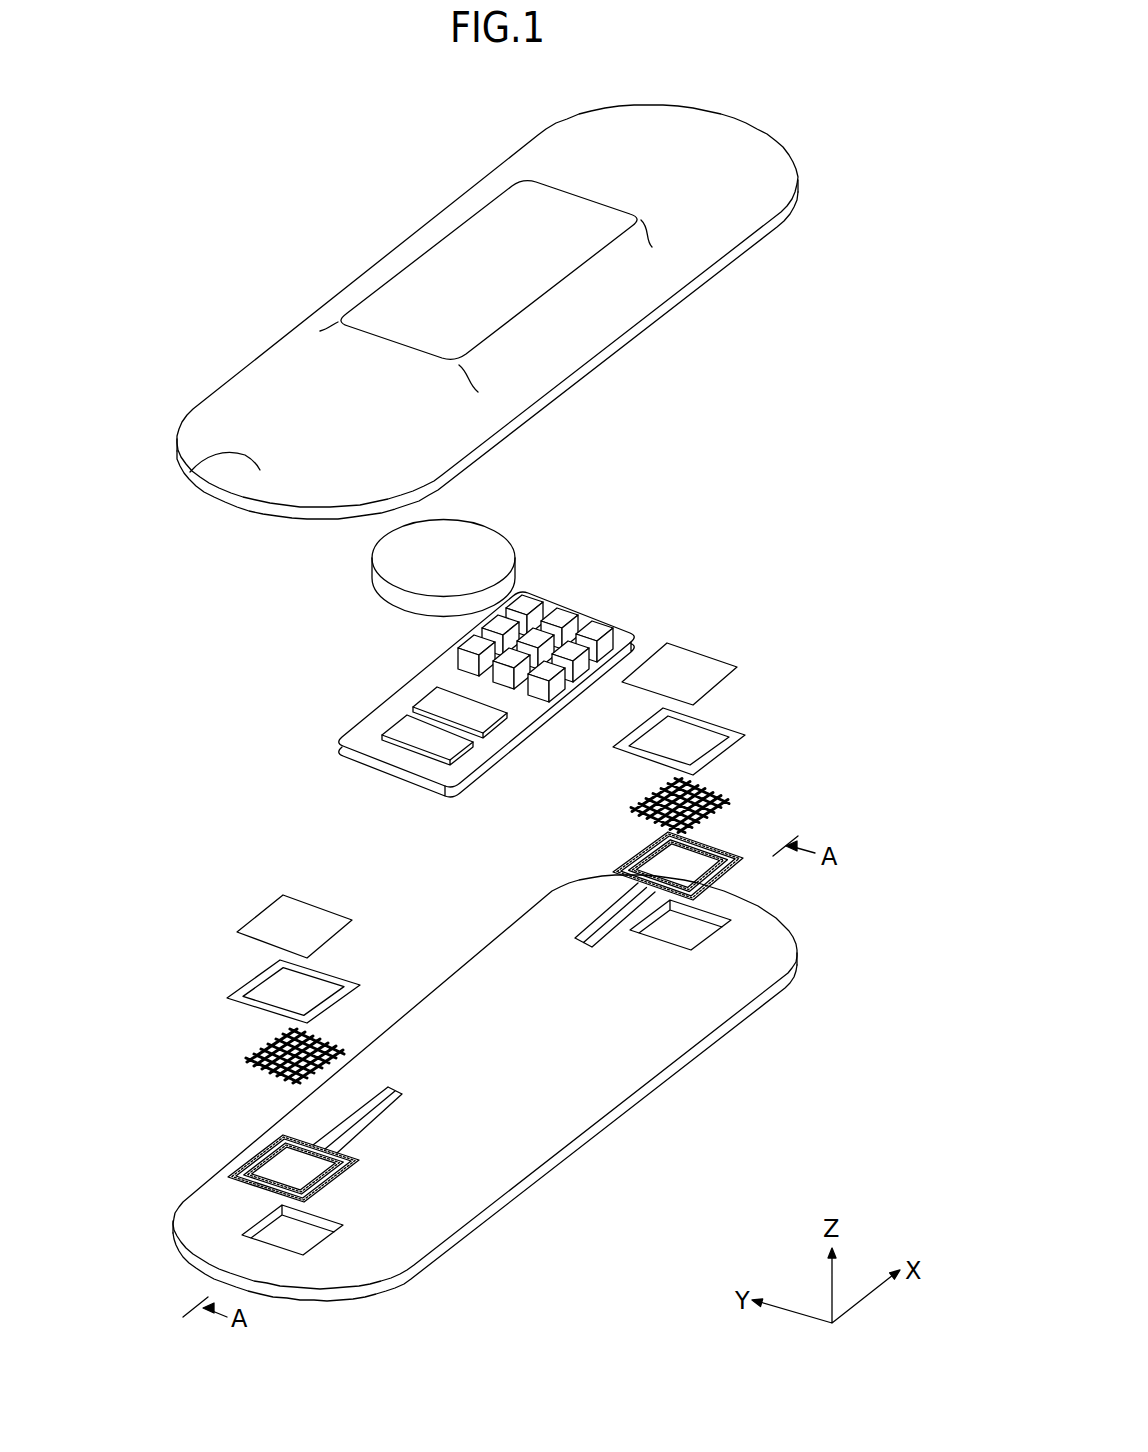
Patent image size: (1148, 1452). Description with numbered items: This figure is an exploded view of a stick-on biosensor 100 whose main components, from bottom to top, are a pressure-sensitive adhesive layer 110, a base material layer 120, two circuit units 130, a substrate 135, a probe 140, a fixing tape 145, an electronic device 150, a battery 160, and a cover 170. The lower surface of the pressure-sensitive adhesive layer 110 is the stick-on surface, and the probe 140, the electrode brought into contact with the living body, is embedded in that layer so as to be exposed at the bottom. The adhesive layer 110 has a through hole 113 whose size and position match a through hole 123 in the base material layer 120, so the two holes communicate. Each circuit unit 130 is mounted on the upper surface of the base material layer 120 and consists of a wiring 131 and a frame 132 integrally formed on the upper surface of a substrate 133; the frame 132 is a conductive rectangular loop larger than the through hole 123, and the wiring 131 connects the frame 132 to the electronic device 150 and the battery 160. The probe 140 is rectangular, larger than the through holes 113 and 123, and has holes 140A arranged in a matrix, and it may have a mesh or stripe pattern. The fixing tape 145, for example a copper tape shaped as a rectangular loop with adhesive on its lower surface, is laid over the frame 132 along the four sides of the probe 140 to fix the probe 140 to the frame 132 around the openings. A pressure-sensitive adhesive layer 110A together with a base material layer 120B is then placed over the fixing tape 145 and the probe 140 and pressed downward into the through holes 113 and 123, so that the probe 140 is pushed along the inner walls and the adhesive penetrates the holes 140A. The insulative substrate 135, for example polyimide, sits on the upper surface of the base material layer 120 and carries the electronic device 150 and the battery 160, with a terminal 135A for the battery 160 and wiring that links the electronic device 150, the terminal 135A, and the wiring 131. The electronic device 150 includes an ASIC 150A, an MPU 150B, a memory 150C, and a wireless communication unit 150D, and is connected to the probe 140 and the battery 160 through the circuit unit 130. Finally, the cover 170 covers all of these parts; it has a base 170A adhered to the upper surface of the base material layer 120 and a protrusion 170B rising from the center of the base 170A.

The stick-on biosensor 100 is at (294, 124).
The cover 170 is at (760, 144).
The base 170A is at (190, 472).
The protrusion 170B is at (463, 262).
The battery 160 is at (497, 535).
The electronic device 150 is at (604, 613).
The application-specific integrated circuit (ASIC) 150A is at (525, 605).
The micro processing unit (MPU) 150B is at (553, 613).
The memory 150C is at (583, 627).
The wireless communication unit 150D is at (679, 657).
The substrate 135 is at (363, 727).
The terminal 135A is at (403, 725).
The pressure-sensitive adhesive layer 110A is at (234, 917).
The second substrate plate 120B is at (258, 916).
The fixing tape 145 is at (244, 989).
The probe 140 is at (241, 1034).
The holes 140A is at (265, 1046).
The pressure-sensitive adhesive layer 110 is at (436, 1066).
The base material layer 120 is at (640, 1078).
The through hole 113 is at (403, 1077).
The through hole 123 is at (258, 1230).
The circuit unit 130 is at (485, 1051).
The wiring 131 is at (340, 1133).
The frame 132 is at (340, 1170).
The substrate 133 is at (335, 1188).